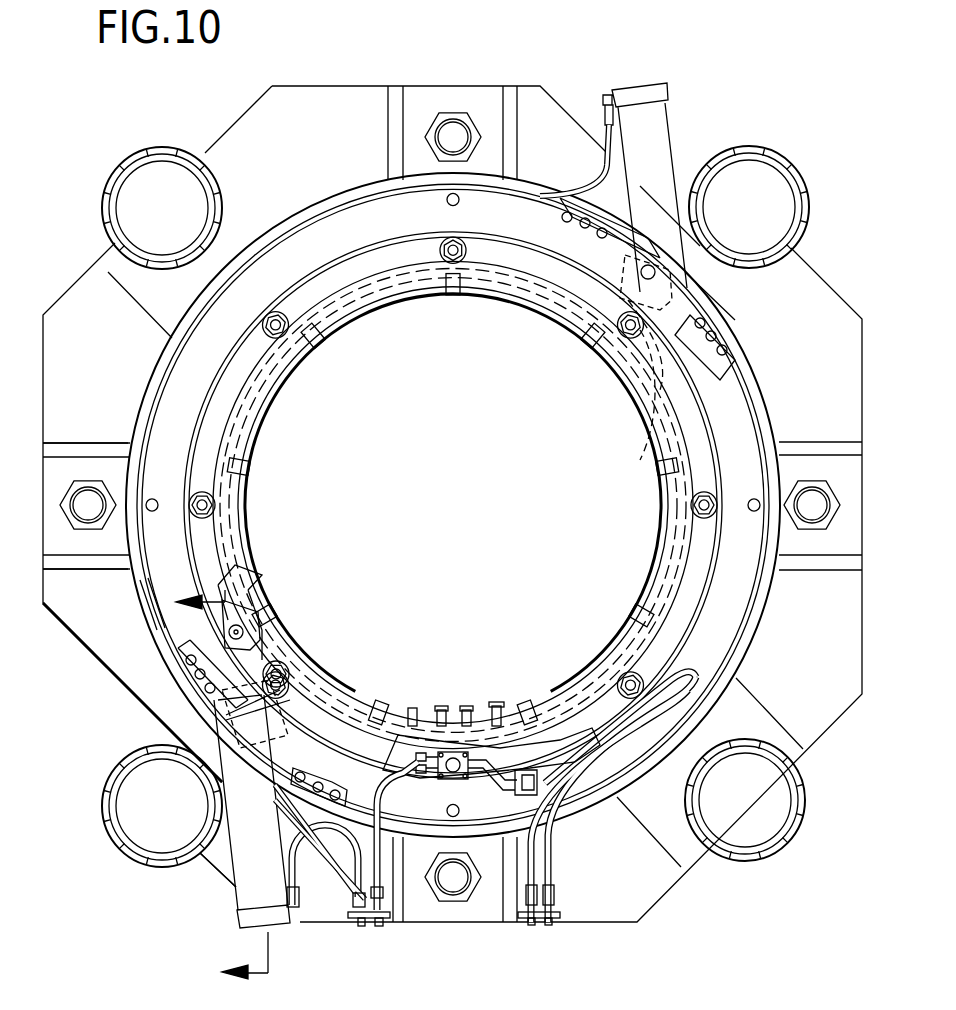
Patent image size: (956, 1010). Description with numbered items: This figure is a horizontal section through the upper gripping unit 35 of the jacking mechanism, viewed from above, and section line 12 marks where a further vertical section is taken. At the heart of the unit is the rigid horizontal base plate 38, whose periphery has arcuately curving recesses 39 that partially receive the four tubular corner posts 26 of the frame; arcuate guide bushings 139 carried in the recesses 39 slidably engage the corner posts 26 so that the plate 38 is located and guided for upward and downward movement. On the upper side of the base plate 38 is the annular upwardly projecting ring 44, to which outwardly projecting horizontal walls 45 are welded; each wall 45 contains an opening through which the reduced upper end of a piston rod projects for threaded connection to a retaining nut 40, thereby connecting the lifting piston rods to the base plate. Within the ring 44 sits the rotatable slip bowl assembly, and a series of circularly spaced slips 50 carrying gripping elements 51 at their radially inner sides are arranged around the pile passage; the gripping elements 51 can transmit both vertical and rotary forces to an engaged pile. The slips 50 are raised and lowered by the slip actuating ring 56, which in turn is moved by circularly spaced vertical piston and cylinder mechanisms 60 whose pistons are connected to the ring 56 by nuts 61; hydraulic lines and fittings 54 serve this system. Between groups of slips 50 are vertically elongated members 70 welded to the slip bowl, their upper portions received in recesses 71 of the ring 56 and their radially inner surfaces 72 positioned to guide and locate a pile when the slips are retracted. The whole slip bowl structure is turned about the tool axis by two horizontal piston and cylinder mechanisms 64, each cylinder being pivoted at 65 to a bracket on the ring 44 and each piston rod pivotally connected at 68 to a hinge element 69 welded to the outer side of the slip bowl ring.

The section line 12- 12 is at (222, 784).
The corner posts 26 is at (797, 170).
The upper gripping unit 35 is at (98, 712).
The base plate 38 is at (100, 612).
The recesses 39 is at (205, 810).
The retaining nut 40 is at (812, 477).
The annular ring 44 is at (155, 378).
The horizontal walls 45 is at (60, 540).
The slips 50 is at (438, 698).
The gripping elements 51 is at (490, 706).
The hose 54 is at (508, 712).
The annular ring 56 is at (372, 298).
The piston and cylinder mechanisms 60 is at (448, 778).
The nuts 61 is at (284, 668).
The horizontal piston and cylinder mechanisms 64 is at (228, 890).
The pivot 65 is at (233, 735).
The pivotal connection 68 is at (242, 638).
The hinge elements 69 is at (262, 605).
The vertically elongated members 70 is at (590, 340).
The recesses 71 is at (312, 342).
The radially inner surfaces 72 is at (448, 298).
The arcuate guide bushings 139 is at (735, 825).